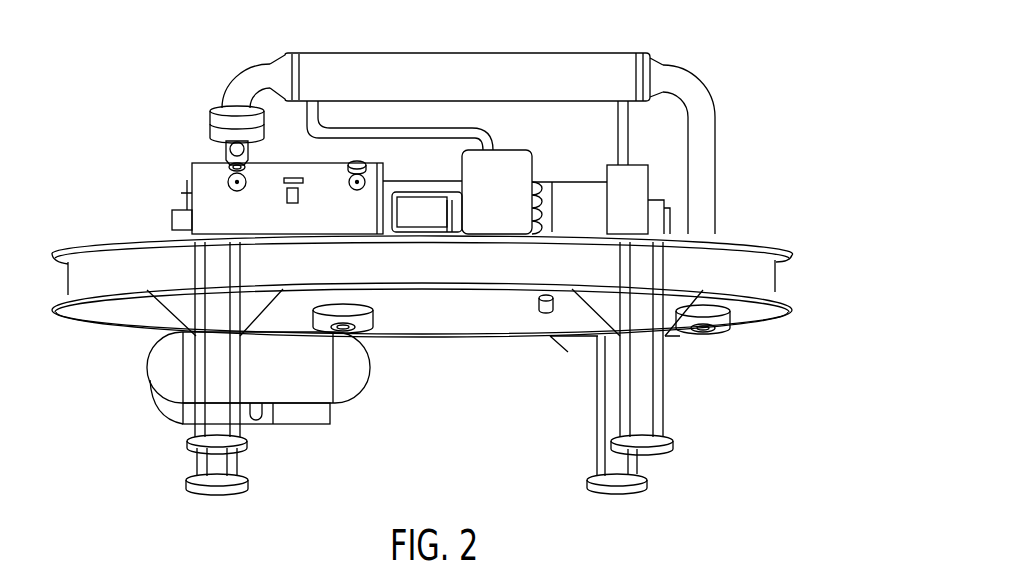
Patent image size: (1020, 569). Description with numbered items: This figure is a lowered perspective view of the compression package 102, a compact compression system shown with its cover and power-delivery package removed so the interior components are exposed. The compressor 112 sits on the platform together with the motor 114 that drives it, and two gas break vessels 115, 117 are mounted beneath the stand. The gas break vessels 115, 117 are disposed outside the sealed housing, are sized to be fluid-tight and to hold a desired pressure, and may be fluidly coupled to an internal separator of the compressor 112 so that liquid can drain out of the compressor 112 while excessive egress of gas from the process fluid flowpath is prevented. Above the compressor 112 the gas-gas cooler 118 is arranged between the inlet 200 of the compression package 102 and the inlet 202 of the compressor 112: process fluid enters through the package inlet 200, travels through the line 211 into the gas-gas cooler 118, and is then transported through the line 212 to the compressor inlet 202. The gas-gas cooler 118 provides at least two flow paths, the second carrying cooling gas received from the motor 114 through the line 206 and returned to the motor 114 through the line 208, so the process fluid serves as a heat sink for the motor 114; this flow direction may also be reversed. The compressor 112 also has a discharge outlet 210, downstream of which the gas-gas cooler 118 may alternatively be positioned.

The compression package 102 is at (793, 50).
The compressor 112 is at (205, 190).
The motor 114 is at (568, 188).
The gas break vessel 115 is at (158, 370).
The gas break vessel 117 is at (168, 410).
The gas-gas cooler 118 is at (538, 62).
The inlet 200 is at (727, 328).
The inlet 202 is at (228, 172).
The line 206 is at (468, 133).
The line 208 is at (625, 134).
The discharge outlet 210 is at (371, 314).
The line 211 is at (708, 187).
The line 212 is at (245, 80).